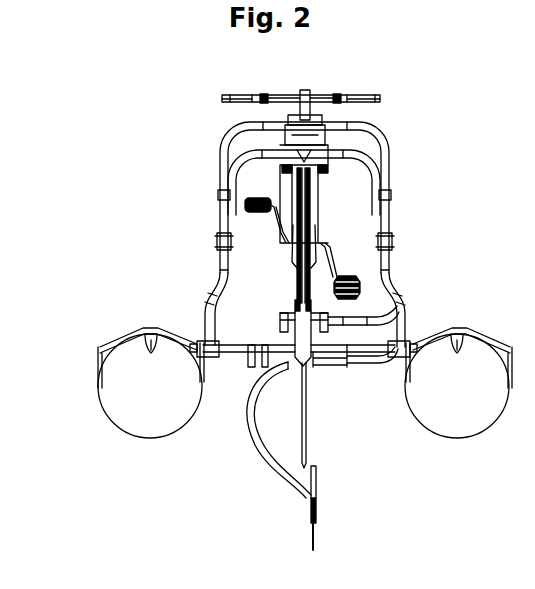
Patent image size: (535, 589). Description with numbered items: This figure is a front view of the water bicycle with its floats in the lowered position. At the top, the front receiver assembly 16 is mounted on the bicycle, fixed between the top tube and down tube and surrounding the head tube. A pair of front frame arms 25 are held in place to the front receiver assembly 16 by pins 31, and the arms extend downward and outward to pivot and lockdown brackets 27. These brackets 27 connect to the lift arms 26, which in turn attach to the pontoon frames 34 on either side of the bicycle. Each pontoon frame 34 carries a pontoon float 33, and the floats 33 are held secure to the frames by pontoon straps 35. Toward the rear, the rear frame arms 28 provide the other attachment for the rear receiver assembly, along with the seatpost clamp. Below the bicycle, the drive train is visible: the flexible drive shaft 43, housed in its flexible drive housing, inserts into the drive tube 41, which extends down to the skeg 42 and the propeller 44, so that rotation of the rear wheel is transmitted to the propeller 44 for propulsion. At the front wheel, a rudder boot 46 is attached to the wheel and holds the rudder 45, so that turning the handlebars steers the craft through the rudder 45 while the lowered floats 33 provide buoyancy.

The front receiver assembly 16 is at (301, 82).
The front frame arms 25 is at (265, 191).
The lift arms 26 is at (265, 304).
The pivot and lockdown brackets 27 is at (267, 223).
The rear frame arms 28 is at (351, 161).
The pins 31 is at (275, 96).
The pontoon floats 33 is at (287, 405).
The pontoon frame 34 is at (286, 322).
The pontoon straps 35 is at (271, 373).
The drive tube 41 is at (222, 446).
The skeg 42 is at (270, 549).
The flexible drive shaft 43 is at (400, 290).
The propeller 44 is at (343, 494).
The rudder 45 is at (338, 416).
The rudder boot 46 is at (327, 365).